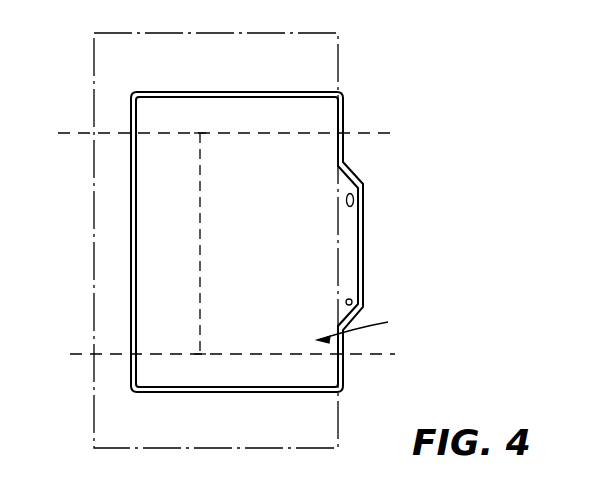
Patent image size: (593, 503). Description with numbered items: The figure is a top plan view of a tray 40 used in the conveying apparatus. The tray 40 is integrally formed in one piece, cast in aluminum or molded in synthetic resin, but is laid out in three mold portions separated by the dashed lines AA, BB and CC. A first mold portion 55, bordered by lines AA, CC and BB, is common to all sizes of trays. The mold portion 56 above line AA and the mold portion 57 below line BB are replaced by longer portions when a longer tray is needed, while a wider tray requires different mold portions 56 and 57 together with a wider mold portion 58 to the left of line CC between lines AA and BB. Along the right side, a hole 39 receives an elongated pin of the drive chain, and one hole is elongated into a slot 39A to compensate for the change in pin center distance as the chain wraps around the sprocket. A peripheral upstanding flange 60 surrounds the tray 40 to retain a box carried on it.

The first mold portion 55 is at (286, 258).
The peripheral upstanding flange 60 is at (333, 91).
The mold portion 56 is at (265, 133).
The mold portion 57 is at (248, 356).
The wider mold portion 58 is at (200, 245).
The hole 39 is at (352, 300).
The slot 39A is at (356, 199).
The tray 40 is at (365, 325).